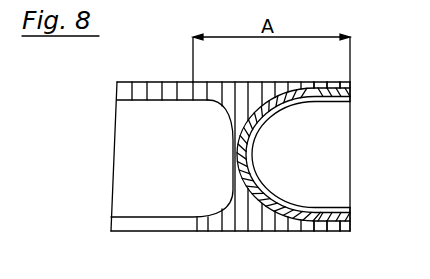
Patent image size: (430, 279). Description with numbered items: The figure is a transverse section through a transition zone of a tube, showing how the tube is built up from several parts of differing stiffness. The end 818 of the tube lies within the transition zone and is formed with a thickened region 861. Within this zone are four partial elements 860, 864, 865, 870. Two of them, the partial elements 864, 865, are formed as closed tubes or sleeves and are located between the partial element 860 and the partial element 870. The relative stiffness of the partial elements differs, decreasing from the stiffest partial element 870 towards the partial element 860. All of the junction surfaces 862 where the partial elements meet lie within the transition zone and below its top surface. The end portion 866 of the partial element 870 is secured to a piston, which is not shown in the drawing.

The end of the tube 818 is at (156, 96).
The partial element 860 is at (254, 220).
The thickened region 861 is at (232, 118).
The junction surfaces 862 is at (312, 221).
The partial element 864 is at (352, 216).
The partial element 865 is at (352, 95).
The end portion 866 is at (348, 120).
The partial element 870 is at (313, 188).